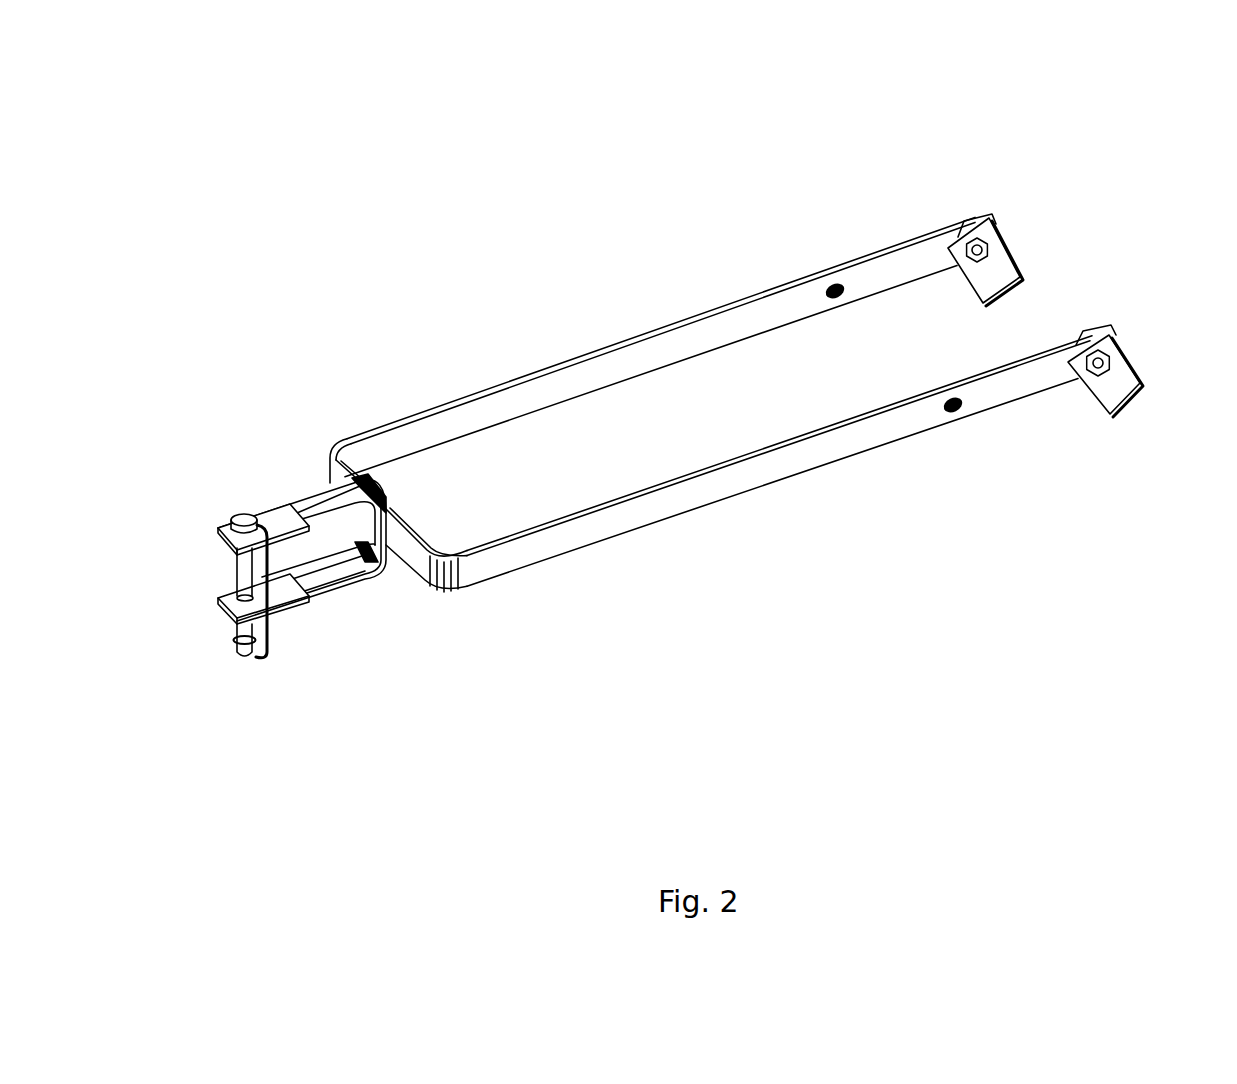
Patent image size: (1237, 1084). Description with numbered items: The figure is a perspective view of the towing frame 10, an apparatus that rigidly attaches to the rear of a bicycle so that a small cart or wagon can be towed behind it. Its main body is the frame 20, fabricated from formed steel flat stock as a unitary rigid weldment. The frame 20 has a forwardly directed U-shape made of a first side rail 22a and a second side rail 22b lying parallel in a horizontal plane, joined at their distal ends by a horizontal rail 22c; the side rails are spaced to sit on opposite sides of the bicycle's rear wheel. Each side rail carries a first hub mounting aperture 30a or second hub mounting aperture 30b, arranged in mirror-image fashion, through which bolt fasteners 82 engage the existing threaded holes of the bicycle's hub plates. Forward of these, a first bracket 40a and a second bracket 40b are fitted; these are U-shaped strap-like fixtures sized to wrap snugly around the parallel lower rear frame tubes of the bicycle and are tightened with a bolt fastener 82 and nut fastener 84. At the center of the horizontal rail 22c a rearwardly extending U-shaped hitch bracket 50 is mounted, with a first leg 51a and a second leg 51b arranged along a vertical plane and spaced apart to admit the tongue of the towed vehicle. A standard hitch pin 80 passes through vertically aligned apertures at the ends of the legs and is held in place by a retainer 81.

The towing frame 10 is at (297, 273).
The frame 20 is at (709, 313).
The first side rail 22a is at (600, 525).
The second side rail 22b is at (603, 366).
The horizontal rail 22c is at (418, 526).
The first hub mounting aperture 30a is at (958, 412).
The second hub mounting aperture 30b is at (832, 283).
The first bracket 40a is at (1110, 390).
The second bracket 40b is at (987, 272).
The bolt fastener 82 is at (1098, 364).
The nut fastener 84 is at (988, 233).
The hitch bracket 50 is at (311, 603).
The first leg 51a is at (283, 520).
The second leg 51b is at (333, 572).
The hitch pin 80 is at (248, 580).
The retainer 81 is at (267, 658).